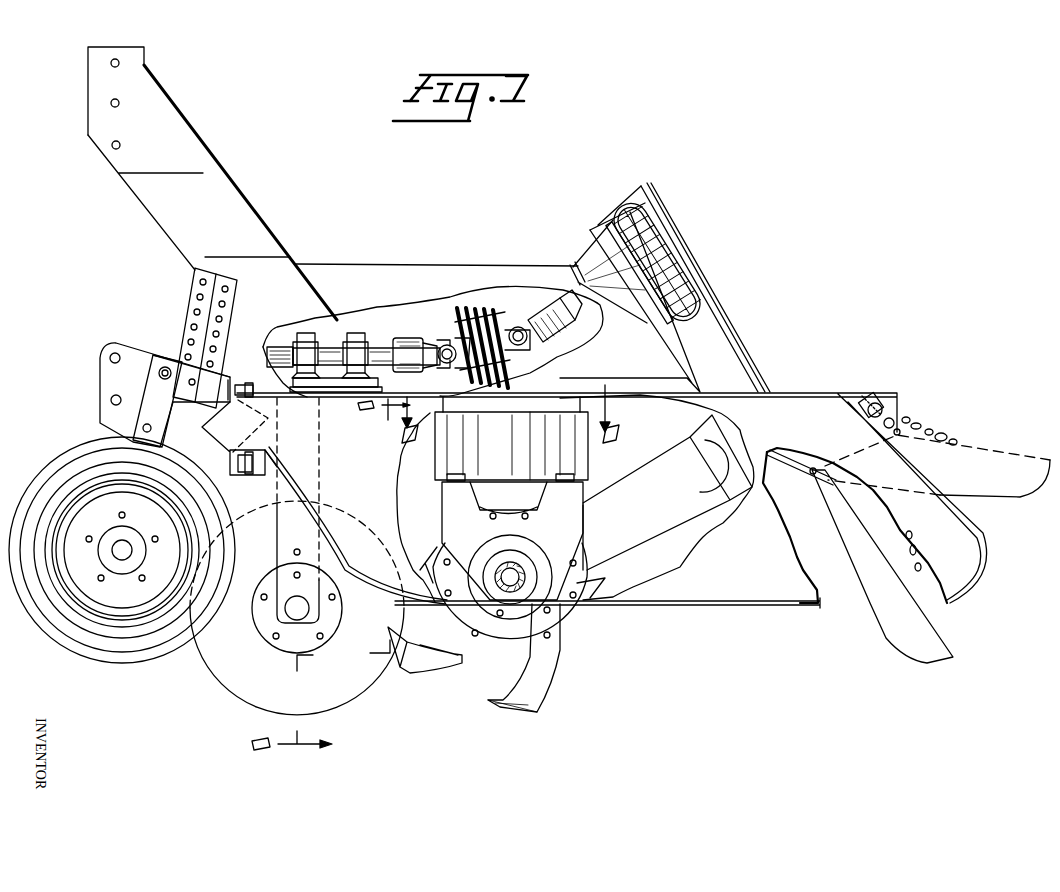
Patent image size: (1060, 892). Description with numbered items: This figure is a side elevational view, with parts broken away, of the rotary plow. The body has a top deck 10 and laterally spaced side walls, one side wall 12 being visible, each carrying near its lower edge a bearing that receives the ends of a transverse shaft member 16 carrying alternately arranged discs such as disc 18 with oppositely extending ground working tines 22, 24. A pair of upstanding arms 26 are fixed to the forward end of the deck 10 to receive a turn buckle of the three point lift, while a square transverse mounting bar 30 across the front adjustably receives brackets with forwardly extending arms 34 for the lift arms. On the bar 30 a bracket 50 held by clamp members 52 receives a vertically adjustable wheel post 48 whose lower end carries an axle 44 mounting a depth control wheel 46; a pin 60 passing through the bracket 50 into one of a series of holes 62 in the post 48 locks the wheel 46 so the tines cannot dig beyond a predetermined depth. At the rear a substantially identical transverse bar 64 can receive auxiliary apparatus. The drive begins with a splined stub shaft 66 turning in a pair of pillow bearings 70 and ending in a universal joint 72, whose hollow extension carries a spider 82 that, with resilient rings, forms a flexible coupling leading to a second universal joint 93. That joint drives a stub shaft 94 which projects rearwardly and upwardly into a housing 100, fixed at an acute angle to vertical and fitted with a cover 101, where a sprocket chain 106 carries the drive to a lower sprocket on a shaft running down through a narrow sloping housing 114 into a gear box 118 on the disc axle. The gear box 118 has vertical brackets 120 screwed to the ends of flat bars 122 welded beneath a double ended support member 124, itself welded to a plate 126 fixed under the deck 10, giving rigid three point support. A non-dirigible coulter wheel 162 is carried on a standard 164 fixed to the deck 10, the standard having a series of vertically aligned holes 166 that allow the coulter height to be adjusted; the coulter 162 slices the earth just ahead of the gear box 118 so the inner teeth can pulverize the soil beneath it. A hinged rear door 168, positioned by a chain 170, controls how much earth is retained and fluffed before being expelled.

The top deck 10 is at (814, 393).
The side wall 12 is at (803, 608).
The transverse shaft member 16 is at (519, 568).
The disc 18 is at (572, 618).
The ground working tine 22 is at (428, 670).
The ground working tine 24 is at (548, 683).
The upstanding arm 26 is at (234, 185).
The mounting bar 30 is at (256, 426).
The forwardly extending arm 34 is at (100, 374).
The axle 44 is at (122, 550).
The depth control wheel 46 is at (100, 655).
The wheel post 48 is at (190, 286).
The bracket 50 is at (224, 384).
The clamp member 52 is at (241, 438).
The pin 60 is at (164, 367).
The holes 62 is at (188, 312).
The transverse bar 64 is at (888, 404).
The stub shaft 66 is at (332, 370).
The pillow bearing 70 is at (356, 333).
The universal joint 72 is at (447, 338).
The spider 82 is at (470, 335).
The second universal joint 93 is at (502, 330).
The stub shaft 94 is at (577, 286).
The housing 100 is at (733, 330).
The cover 101 is at (655, 216).
The sprocket chain 106 is at (684, 256).
The housing 114 is at (672, 526).
The gear box 118 is at (576, 583).
The vertical bracket 120 is at (577, 521).
The flat bar 122 is at (580, 478).
The support member 124 is at (442, 463).
The plate 126 is at (560, 398).
The coulter wheel 162 is at (216, 668).
The standard 164 is at (285, 527).
The hub plate 166 is at (294, 553).
The hinged door 168 is at (1015, 455).
The chain 170 is at (937, 433).